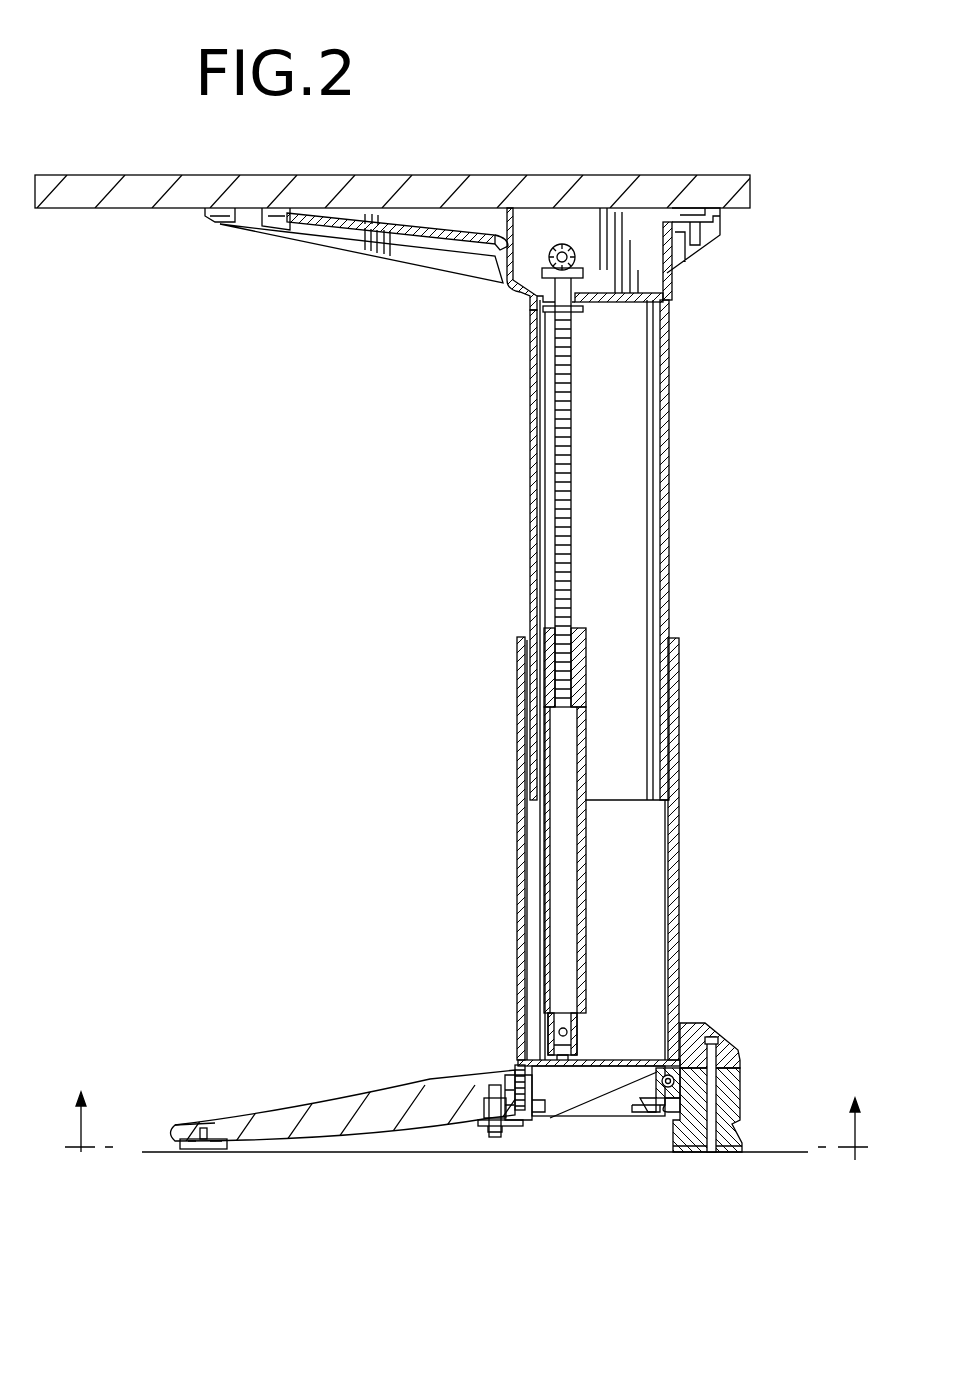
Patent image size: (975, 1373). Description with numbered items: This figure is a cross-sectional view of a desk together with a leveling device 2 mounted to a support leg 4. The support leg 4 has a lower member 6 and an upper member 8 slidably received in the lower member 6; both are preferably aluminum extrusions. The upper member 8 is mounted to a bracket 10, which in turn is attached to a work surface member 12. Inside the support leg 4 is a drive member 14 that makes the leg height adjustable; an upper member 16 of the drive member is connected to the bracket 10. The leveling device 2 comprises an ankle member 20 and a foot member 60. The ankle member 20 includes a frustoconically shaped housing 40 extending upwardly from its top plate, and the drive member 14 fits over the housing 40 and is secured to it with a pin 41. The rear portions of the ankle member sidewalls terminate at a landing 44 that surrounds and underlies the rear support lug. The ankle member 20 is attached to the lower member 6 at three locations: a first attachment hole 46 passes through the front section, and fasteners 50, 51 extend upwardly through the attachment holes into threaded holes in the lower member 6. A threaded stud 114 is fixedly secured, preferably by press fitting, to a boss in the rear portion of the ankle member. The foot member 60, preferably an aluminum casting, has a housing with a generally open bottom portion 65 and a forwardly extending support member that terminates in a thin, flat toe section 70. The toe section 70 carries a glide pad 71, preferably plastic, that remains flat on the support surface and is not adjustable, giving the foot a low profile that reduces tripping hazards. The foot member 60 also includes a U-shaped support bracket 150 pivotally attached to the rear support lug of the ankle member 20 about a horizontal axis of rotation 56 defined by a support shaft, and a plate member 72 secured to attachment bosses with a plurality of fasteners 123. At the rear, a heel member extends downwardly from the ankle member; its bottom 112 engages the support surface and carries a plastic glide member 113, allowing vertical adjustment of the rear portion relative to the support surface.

The leveling device 2 is at (454, 663).
The support leg 4 is at (517, 697).
The lower member 6 is at (520, 930).
The upper member 8 is at (527, 417).
The bracket 10 is at (447, 268).
The work surface member 12 is at (598, 175).
The drive member 14 is at (565, 878).
The upper member of the drive member 16 is at (560, 273).
The ankle member 20 is at (552, 1104).
The housing 40 is at (548, 1030).
The pin 41 is at (564, 1037).
The landing 44 is at (662, 1088).
The first attachment hole 46 is at (542, 1112).
The fastener 50 is at (521, 1095).
The fastener 51 is at (677, 1052).
The horizontal axis of rotation 56 is at (674, 1080).
The foot member 60 is at (388, 1094).
The open bottom portion 65 is at (681, 1150).
The toe section 70 is at (183, 1122).
The glide pad 71 is at (195, 1152).
The plate member 72 is at (488, 1118).
The bottom of the heel 112 is at (740, 1128).
The glide member 113 is at (741, 1148).
The threaded stud 114 is at (714, 1090).
The fasteners 123 is at (510, 1092).
The support bracket 150 is at (641, 1110).